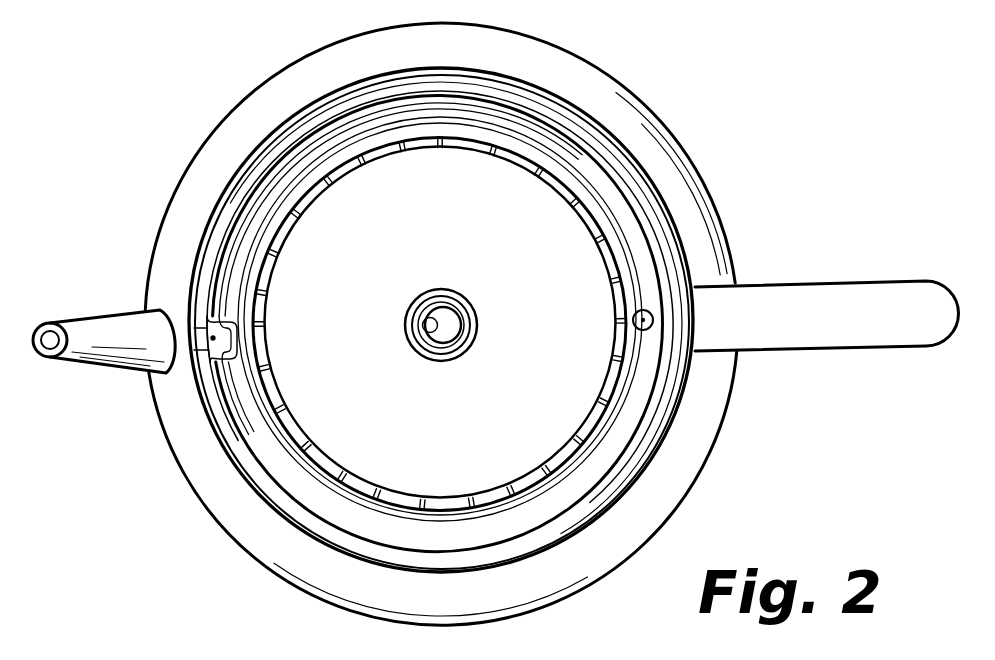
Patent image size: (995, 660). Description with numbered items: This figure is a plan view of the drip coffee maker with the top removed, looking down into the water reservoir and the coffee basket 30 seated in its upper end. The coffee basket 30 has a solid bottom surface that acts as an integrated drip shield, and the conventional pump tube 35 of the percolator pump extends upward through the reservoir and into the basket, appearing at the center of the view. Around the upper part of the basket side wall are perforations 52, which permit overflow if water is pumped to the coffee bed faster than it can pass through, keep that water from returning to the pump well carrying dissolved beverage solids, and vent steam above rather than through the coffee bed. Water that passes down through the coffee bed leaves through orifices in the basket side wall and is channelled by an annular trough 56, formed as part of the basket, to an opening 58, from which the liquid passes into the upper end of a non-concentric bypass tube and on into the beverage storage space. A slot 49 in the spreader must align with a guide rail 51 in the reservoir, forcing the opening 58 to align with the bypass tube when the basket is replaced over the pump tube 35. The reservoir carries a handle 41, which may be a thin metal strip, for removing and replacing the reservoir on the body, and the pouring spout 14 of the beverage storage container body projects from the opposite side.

The pouring spout 14 is at (117, 368).
The coffee basket 30 is at (620, 298).
The pump tube 35 is at (425, 329).
The handle 41 is at (864, 286).
The slot 49 is at (226, 314).
The guide rail 51 is at (210, 335).
The perforations 52 is at (577, 205).
The annular trough 56 is at (337, 488).
The opening 58 is at (633, 321).